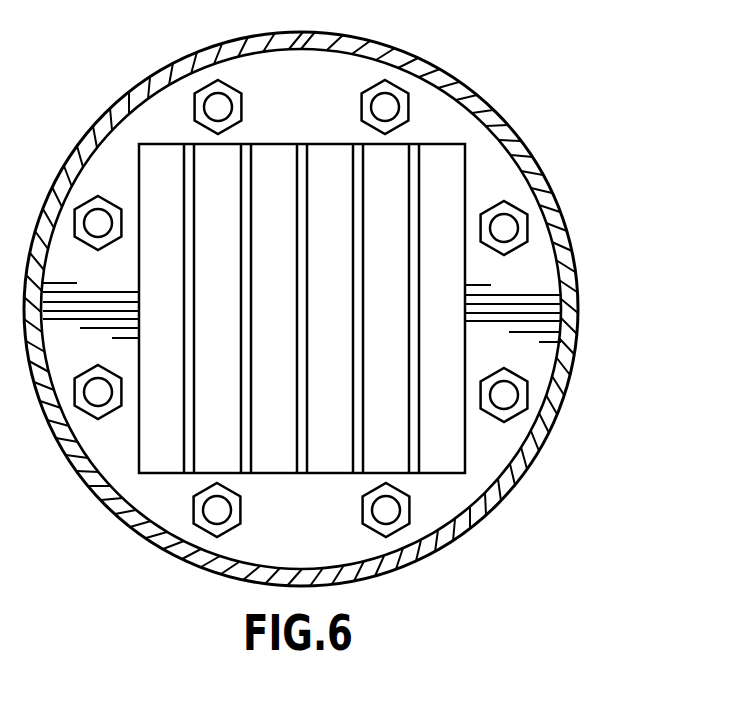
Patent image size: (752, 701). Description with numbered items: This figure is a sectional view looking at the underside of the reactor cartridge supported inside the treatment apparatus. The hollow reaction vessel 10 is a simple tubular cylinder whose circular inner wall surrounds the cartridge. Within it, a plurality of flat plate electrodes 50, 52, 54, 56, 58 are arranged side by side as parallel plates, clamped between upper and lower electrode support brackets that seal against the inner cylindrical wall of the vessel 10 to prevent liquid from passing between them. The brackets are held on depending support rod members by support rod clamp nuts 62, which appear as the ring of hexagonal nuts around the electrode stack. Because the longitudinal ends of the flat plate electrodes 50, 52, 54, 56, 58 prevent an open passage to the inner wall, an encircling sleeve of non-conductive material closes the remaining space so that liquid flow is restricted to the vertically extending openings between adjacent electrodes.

The reaction vessel 10 is at (465, 83).
The flat plate electrode 50 is at (183, 332).
The flat plate electrode 52 is at (239, 332).
The flat plate electrode 54 is at (295, 332).
The flat plate electrode 56 is at (351, 332).
The flat plate electrode 58 is at (408, 332).
The support rod clamp nut 62 is at (362, 107).